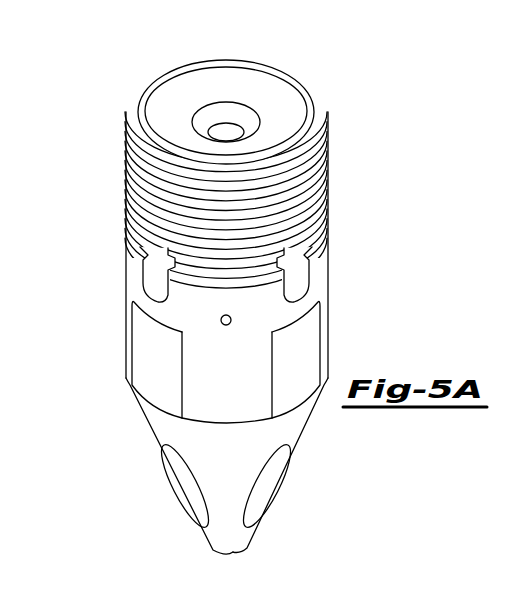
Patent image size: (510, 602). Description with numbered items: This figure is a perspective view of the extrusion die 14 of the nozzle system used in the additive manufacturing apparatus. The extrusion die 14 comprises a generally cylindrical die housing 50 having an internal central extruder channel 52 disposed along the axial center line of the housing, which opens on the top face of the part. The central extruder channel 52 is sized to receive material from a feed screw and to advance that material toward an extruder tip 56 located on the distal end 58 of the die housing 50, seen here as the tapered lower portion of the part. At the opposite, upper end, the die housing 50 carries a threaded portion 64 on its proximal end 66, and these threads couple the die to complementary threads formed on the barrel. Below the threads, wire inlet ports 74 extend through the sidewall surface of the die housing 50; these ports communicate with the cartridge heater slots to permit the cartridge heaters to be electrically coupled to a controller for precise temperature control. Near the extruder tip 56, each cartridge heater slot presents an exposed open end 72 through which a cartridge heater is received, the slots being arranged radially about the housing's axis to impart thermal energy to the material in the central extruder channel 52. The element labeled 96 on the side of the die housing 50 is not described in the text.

The extrusion die 14 is at (98, 113).
The central extruder channel 52 is at (229, 133).
The proximal end 66 is at (147, 138).
The threaded portion 64 is at (327, 187).
The die housing 50 is at (325, 265).
The wire inlet ports 74 is at (157, 273).
The flat 96 is at (126, 350).
The exposed open end 72 is at (186, 470).
The extruder tip 56 is at (215, 548).
The distal end 58 is at (250, 533).